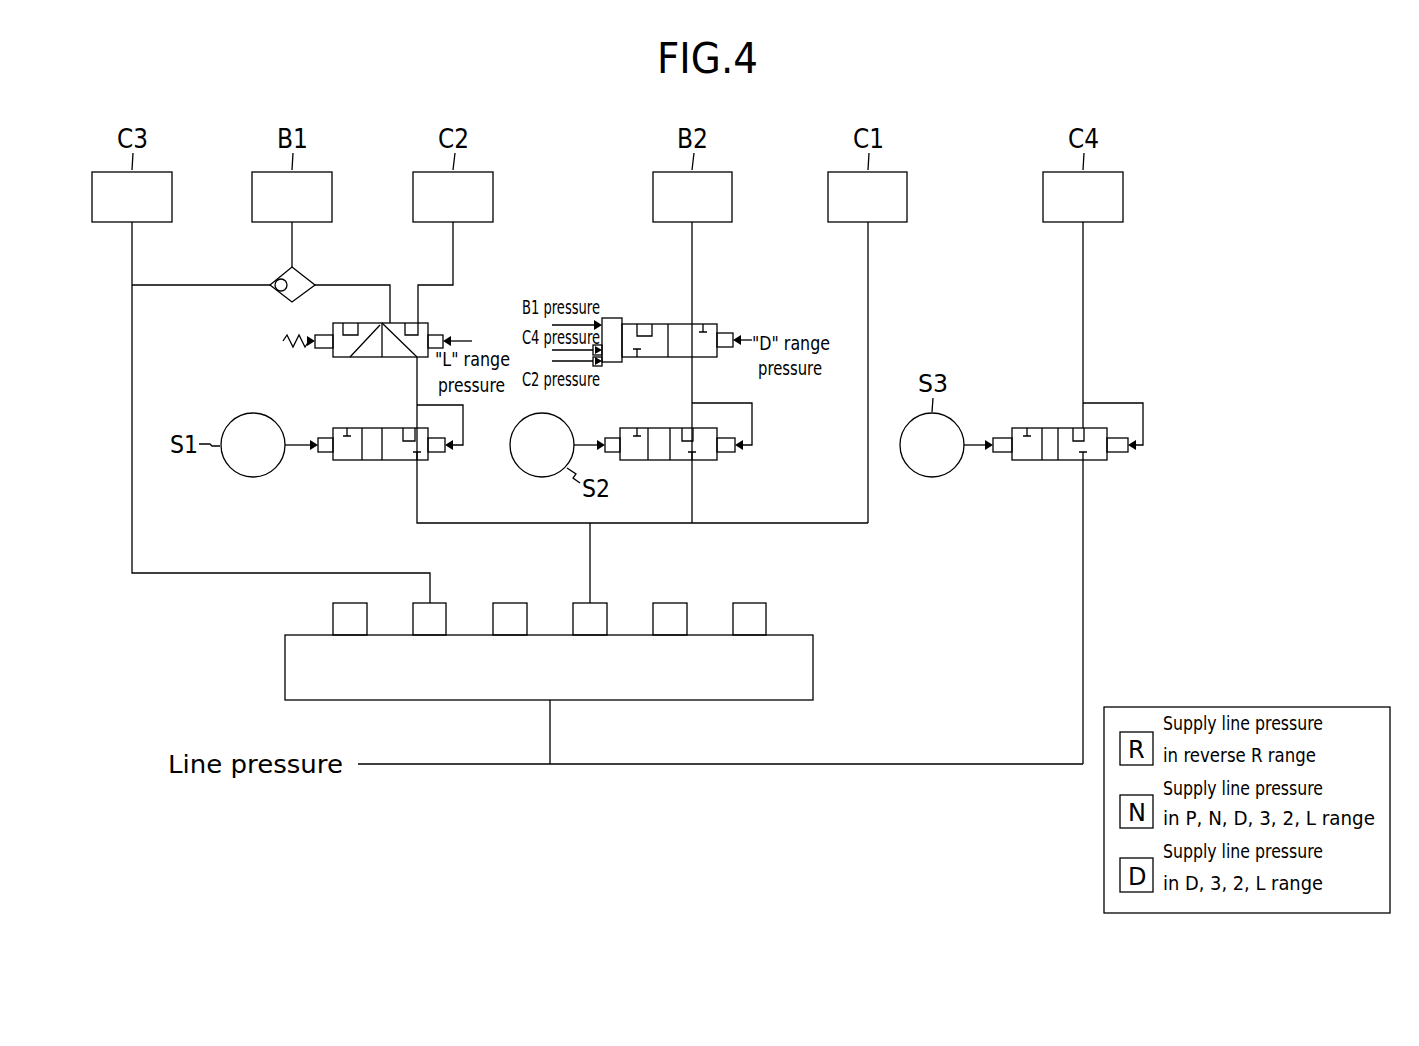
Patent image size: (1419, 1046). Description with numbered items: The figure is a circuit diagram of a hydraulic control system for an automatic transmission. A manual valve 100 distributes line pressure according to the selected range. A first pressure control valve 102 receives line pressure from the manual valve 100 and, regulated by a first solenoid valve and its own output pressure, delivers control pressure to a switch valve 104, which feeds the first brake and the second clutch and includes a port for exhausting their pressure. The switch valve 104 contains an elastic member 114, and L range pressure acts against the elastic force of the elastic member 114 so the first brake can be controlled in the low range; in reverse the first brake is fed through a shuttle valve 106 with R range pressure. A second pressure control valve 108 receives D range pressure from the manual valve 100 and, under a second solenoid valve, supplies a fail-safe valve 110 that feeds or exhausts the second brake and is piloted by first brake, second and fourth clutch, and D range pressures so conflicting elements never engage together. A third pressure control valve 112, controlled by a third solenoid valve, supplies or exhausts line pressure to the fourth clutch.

The manual valve 100 is at (813, 664).
The first pressure control valve 102 is at (323, 477).
The switch valve 104 is at (435, 318).
The shuttle valve 106 is at (272, 302).
The second pressure control valve 108 is at (700, 470).
The fail-safe valve 110 is at (717, 313).
The third pressure control valve 112 is at (1095, 470).
The elastic member 114 is at (305, 346).